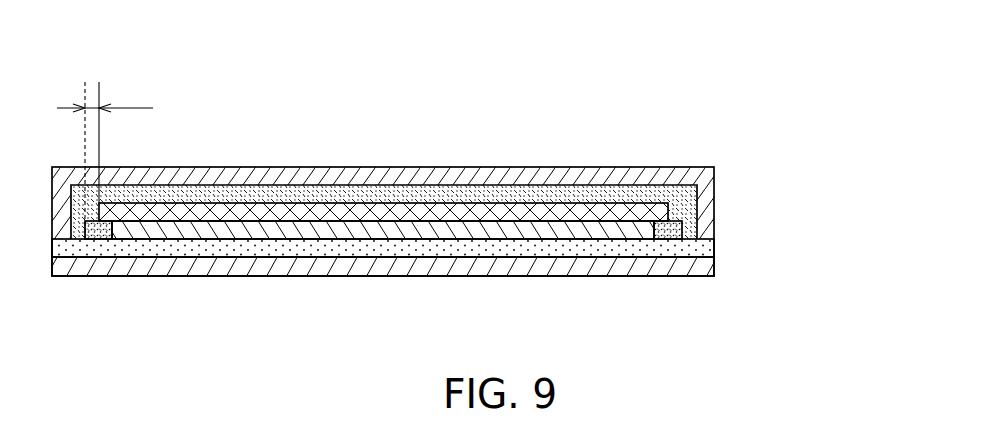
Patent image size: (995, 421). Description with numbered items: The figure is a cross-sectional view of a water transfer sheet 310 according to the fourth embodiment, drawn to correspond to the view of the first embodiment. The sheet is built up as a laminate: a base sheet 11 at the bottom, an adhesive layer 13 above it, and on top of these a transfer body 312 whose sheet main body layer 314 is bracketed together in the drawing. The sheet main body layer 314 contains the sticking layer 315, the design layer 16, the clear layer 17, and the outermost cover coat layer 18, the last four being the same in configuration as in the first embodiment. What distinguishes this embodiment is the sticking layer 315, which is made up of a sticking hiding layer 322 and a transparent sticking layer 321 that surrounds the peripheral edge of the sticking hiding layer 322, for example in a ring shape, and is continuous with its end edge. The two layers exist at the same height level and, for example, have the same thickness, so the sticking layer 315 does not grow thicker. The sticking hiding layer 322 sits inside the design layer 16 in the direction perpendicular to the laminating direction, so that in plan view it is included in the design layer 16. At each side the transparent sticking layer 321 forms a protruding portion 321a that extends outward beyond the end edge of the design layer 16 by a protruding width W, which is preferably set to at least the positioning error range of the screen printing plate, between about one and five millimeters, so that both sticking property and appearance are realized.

The water transfer sheet 310 is at (352, 98).
The transfer body 312 is at (827, 100).
The sheet main body layer 314 is at (775, 143).
The base sheet 11 is at (713, 272).
The adhesive layer 13 is at (713, 250).
The design layer 16 is at (668, 212).
The clear layer 17 is at (688, 197).
The cover coat layer 18 is at (677, 176).
The sticking layer 315 is at (684, 231).
The transparent sticking layer 321 is at (670, 240).
The protruding portion 321a is at (100, 234).
The sticking hiding layer 322 is at (505, 230).
The protruding width W is at (105, 158).